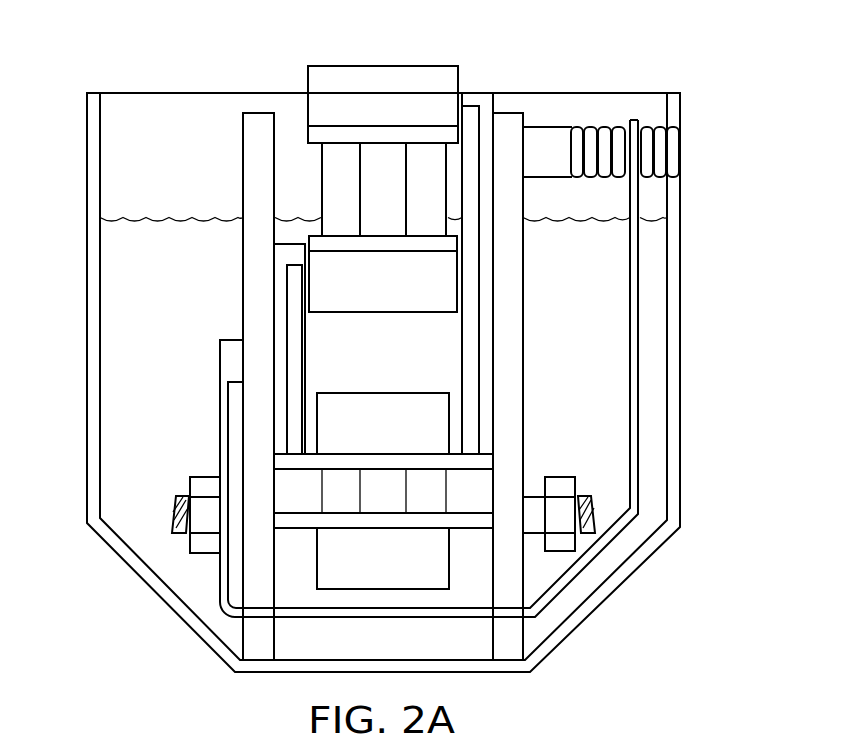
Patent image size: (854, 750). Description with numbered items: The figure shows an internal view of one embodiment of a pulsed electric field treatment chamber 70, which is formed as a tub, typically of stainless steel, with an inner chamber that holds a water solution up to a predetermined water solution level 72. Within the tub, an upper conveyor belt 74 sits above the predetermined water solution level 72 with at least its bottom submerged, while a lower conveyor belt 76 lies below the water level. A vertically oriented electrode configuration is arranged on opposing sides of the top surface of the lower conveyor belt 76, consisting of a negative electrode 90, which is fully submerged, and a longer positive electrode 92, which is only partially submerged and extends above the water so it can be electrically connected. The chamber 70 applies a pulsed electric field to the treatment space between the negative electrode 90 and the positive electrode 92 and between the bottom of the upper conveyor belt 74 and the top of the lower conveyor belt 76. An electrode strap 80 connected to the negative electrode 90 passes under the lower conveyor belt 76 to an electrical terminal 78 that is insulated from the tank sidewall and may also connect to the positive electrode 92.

The treatment chamber 70 is at (86, 314).
The predetermined water solution level 72 is at (158, 220).
The upper conveyor belt 74 is at (380, 125).
The lower conveyor belt 76 is at (376, 453).
The electrical terminal 78 is at (603, 127).
The electrode strap 80 is at (218, 422).
The negative electrode 90 is at (287, 303).
The positive electrode 92 is at (478, 303).